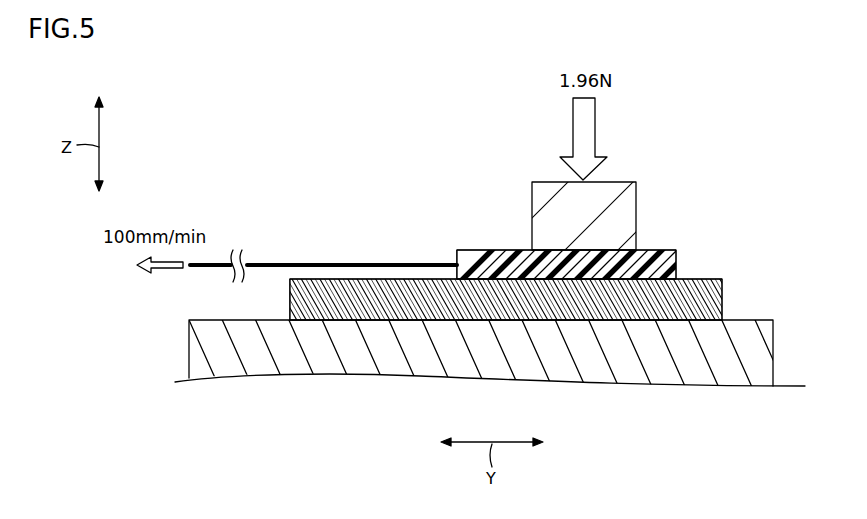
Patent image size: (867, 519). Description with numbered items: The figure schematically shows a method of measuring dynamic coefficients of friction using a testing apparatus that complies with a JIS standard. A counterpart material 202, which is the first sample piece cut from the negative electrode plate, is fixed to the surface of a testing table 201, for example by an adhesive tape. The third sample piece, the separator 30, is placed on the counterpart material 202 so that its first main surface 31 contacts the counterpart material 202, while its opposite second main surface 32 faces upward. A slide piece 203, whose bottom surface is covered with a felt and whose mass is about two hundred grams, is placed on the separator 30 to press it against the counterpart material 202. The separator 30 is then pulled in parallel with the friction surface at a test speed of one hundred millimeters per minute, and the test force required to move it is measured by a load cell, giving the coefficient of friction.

The separator 30 is at (457, 262).
The first main surface 31 is at (672, 289).
The second main surface 32 is at (668, 250).
The testing table 201 is at (773, 356).
The counterpart material 202 is at (722, 303).
The slide piece 203 is at (532, 188).